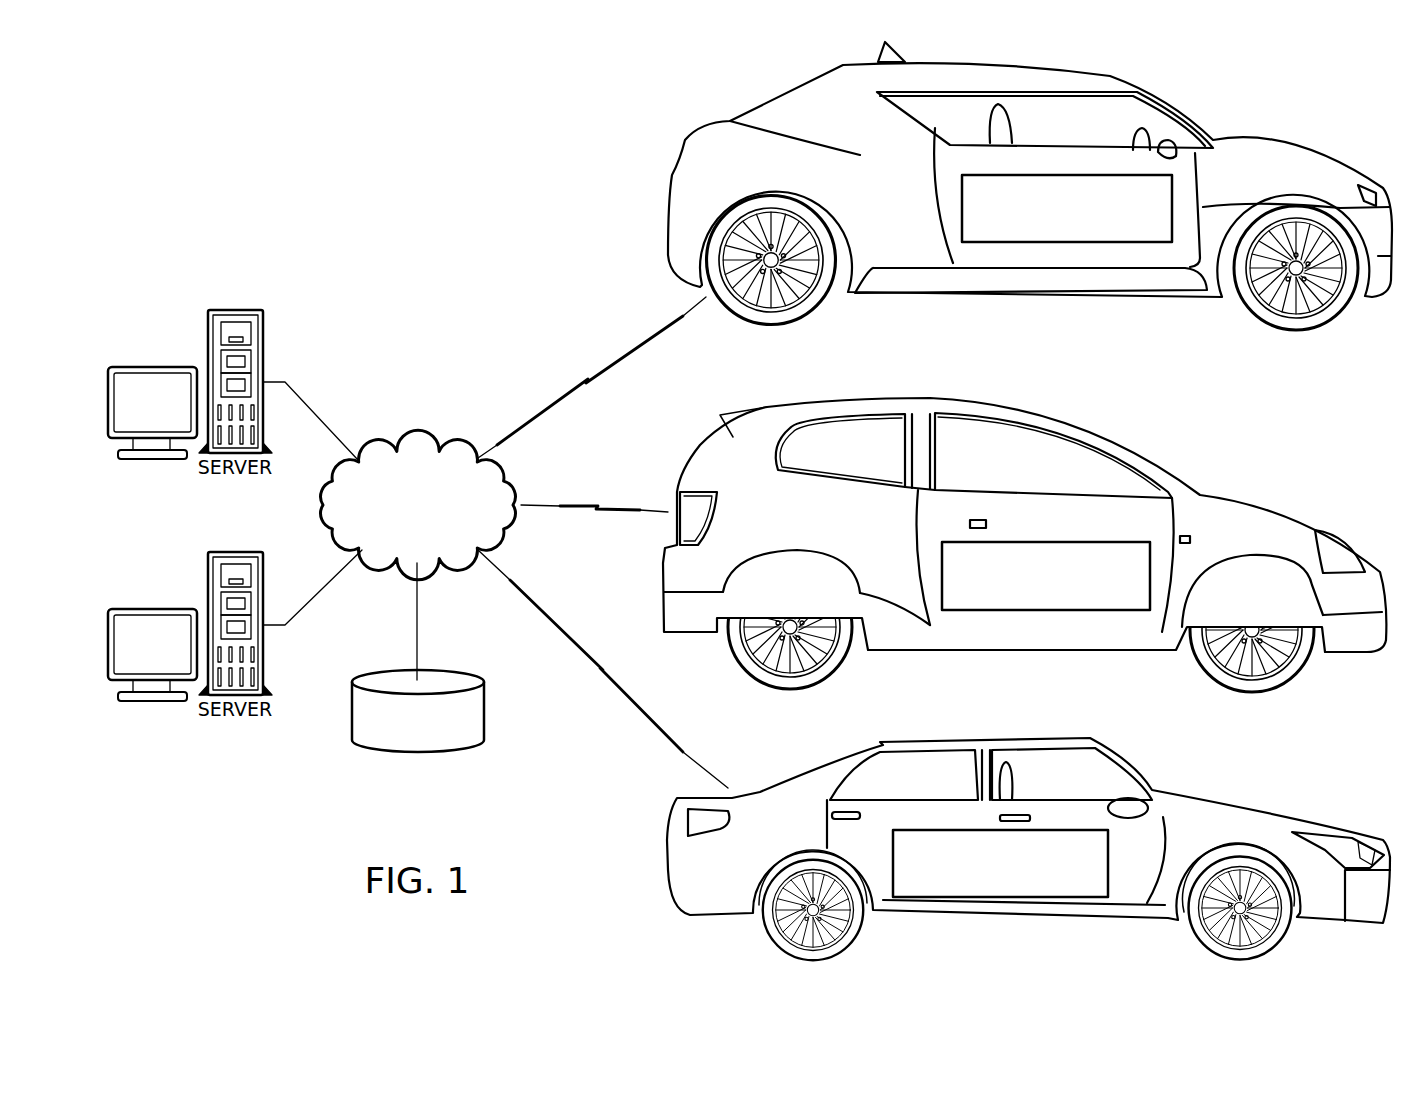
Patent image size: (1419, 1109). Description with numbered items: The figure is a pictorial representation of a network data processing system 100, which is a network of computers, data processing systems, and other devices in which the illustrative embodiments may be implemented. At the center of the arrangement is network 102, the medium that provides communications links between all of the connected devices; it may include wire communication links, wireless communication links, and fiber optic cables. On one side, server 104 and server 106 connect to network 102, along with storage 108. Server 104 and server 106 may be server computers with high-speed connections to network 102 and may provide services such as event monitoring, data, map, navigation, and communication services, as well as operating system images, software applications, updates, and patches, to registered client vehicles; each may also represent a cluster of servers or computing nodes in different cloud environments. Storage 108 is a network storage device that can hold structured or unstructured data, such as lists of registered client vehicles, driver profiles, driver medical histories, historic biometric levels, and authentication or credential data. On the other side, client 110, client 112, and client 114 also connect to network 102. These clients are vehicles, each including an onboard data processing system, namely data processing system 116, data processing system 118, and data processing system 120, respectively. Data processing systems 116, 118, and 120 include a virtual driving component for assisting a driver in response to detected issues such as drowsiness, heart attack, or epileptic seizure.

The network data processing system 100 is at (372, 122).
The network 102 is at (410, 444).
The server 104 is at (153, 364).
The server 106 is at (152, 700).
The storage 108 is at (405, 745).
The client 110 is at (1291, 141).
The client 112 is at (1106, 442).
The client 114 is at (1133, 776).
The data processing system 116 is at (955, 208).
The data processing system 118 is at (930, 572).
The data processing system 120 is at (1110, 862).